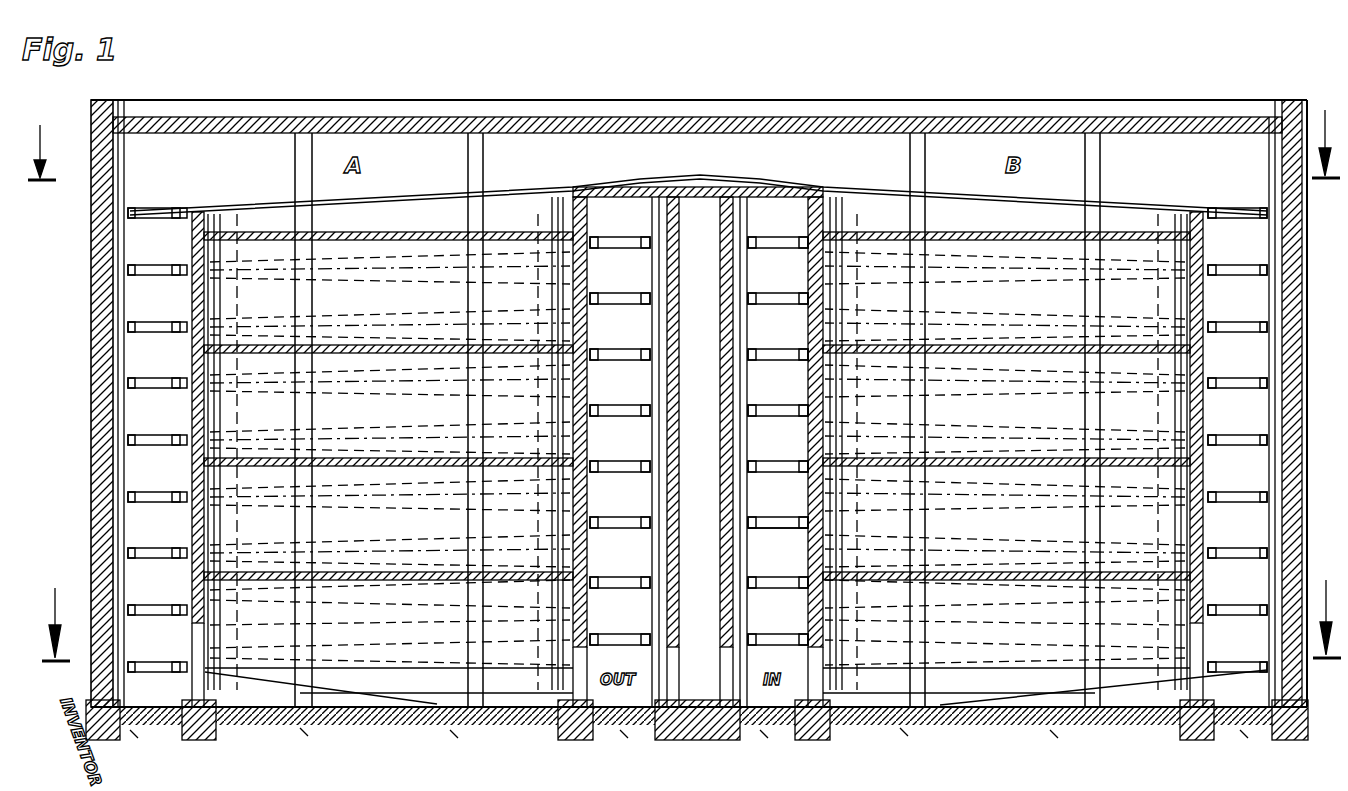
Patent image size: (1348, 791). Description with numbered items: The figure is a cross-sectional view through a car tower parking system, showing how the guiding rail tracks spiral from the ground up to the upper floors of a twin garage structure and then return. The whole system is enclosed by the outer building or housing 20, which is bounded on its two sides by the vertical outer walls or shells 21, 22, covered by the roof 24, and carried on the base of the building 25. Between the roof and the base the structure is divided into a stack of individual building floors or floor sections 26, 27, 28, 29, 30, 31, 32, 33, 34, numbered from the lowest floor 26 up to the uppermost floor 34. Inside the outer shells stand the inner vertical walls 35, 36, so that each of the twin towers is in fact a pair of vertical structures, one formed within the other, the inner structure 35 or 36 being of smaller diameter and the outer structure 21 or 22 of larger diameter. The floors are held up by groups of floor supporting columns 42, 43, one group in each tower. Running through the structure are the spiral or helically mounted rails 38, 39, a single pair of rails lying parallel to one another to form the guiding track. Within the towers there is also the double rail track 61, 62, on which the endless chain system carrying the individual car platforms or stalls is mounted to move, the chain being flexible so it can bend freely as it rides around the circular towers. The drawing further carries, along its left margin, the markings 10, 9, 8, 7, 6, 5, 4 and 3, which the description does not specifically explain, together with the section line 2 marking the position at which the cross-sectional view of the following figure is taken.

The outer building 20 is at (528, 93).
The vertical outer wall 21 is at (95, 222).
The vertical outer wall 22 is at (1283, 168).
The roof 24 is at (1020, 120).
The base of the building 25 is at (577, 740).
The building floor 26 is at (157, 654).
The building floor 27 is at (157, 597).
The building floor 28 is at (157, 541).
The building floor 29 is at (157, 484).
The building floor 30 is at (157, 428).
The building floor 31 is at (157, 371).
The building floor 32 is at (157, 314).
The building floor 33 is at (157, 258).
The building floor 34 is at (157, 201).
The inner vertical wall 35 is at (208, 524).
The inner vertical wall 36 is at (832, 496).
The helically mounted rail 38 is at (565, 600).
The helically mounted rail 39 is at (660, 610).
The floor supporting column 42 is at (380, 633).
The floor supporting column 43 is at (1000, 608).
The double rail track 61 is at (757, 530).
The double rail track 62 is at (793, 518).
The level 10 is at (70, 196).
The level 9 is at (62, 261).
The level 8 is at (62, 313).
The level 7 is at (62, 365).
The level 6 is at (62, 417).
The level 5 is at (62, 469).
The level 4 is at (52, 530).
The section line 3 is at (689, 634).
The section line 2 is at (684, 385).